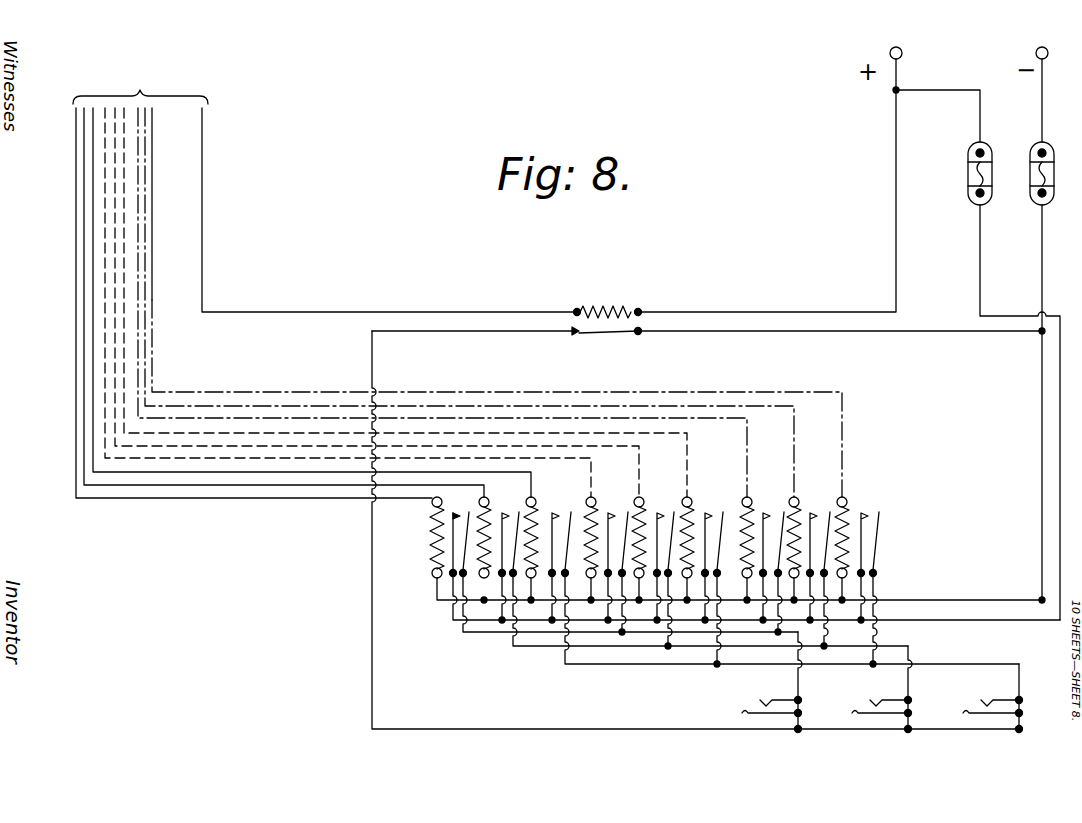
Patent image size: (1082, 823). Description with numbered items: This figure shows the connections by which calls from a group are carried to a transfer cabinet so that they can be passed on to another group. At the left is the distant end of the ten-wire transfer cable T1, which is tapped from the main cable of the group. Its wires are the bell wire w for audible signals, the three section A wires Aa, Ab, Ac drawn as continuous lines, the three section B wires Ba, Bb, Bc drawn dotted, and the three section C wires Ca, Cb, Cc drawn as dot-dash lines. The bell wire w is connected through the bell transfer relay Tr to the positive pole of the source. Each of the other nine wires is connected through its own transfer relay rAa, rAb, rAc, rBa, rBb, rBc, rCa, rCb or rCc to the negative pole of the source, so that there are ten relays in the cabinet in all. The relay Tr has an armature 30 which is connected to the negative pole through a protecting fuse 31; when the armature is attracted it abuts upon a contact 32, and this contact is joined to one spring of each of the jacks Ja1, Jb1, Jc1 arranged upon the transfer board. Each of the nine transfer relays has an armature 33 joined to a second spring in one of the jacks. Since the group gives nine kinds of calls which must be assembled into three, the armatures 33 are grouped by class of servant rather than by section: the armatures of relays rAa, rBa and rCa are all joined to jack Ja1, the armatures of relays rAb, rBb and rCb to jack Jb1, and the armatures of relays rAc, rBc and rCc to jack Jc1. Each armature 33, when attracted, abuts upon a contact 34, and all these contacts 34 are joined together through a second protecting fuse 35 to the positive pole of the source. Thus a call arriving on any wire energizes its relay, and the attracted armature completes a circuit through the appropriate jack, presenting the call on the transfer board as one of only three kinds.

The ten-wire transfer cable T1 is at (140, 83).
The section A wire Aa is at (76, 126).
The section A wire Ab is at (84, 162).
The section A wire Ac is at (93, 192).
The section B wire Ba is at (105, 228).
The section B wire Bb is at (115, 250).
The section B wire Bc is at (124, 275).
The section C wire Ca is at (138, 160).
The section C wire Cb is at (145, 192).
The section C wire Cc is at (152, 232).
The bell wire w is at (202, 120).
The bell transfer relay Tr is at (608, 297).
The armature 30 is at (610, 336).
The contact 32 is at (574, 336).
The protecting fuse 31 is at (1046, 206).
The protecting fuse 35 is at (973, 202).
The armature 33 is at (466, 537).
The contact 34 is at (462, 504).
The transfer relay rAa is at (426, 537).
The transfer relay rAb is at (498, 552).
The transfer relay rAc is at (547, 552).
The transfer relay rBa is at (606, 558).
The transfer relay rBb is at (653, 565).
The transfer relay rBc is at (702, 574).
The transfer relay rCa is at (762, 558).
The transfer relay rCb is at (808, 565).
The transfer relay rCc is at (860, 574).
The jack JaI Ja1 is at (769, 682).
The jack JbI Jb1 is at (882, 689).
The jack JcI Jc1 is at (992, 698).